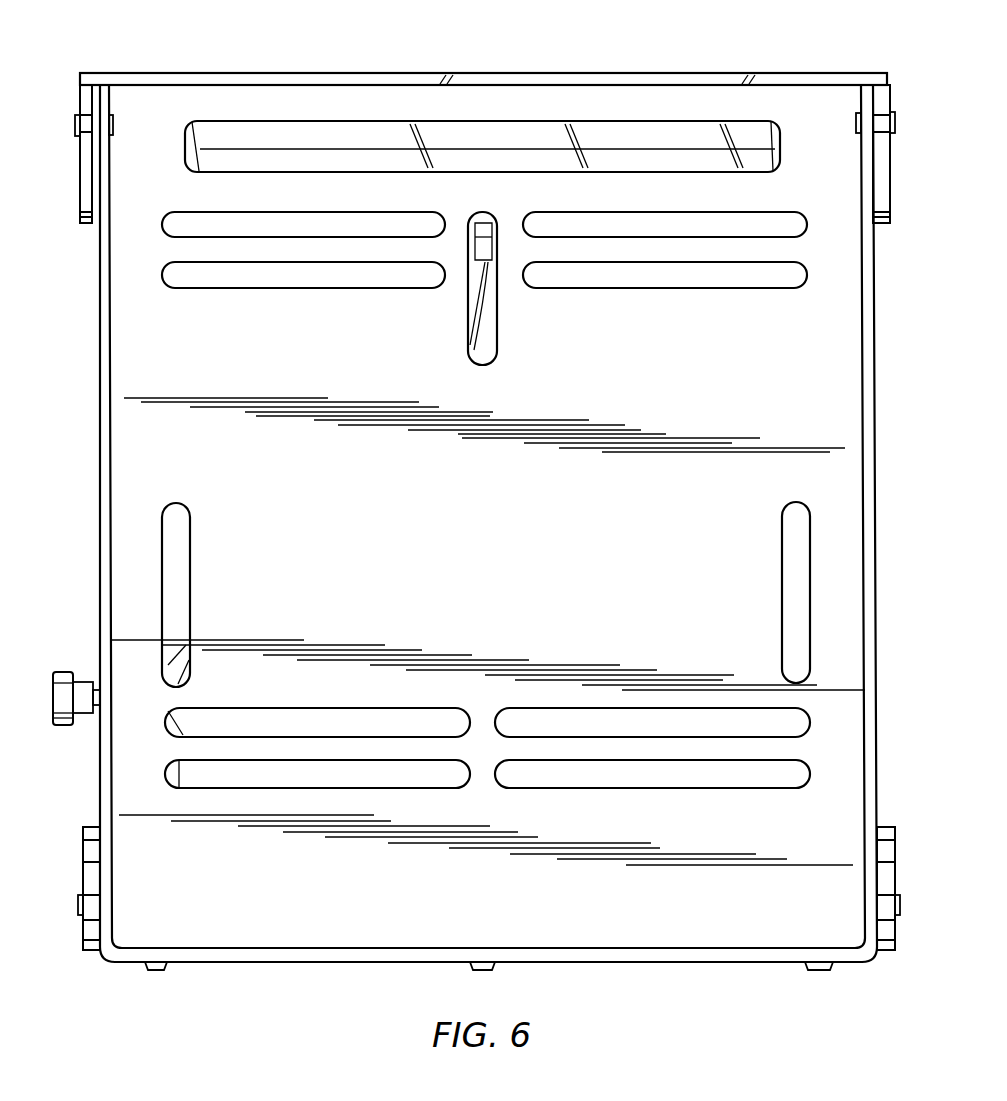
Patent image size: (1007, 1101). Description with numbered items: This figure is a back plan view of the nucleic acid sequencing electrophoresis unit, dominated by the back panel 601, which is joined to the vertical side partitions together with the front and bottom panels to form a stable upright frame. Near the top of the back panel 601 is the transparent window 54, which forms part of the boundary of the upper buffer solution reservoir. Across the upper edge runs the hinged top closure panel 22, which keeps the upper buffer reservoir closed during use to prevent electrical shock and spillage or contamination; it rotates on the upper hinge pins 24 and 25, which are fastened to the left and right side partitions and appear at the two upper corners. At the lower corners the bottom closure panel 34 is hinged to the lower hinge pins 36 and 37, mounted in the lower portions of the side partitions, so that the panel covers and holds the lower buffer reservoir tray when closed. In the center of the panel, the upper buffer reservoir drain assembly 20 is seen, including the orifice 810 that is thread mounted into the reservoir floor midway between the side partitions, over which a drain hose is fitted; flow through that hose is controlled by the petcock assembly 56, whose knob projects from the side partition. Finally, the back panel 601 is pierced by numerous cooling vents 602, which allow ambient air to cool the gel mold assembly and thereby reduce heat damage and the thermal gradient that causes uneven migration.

The hinged top closure panel 22 is at (130, 73).
The upper hinge pin 24 is at (76, 118).
The upper hinge pin 25 is at (896, 120).
The transparent window 54 is at (185, 150).
The orifice 810 is at (495, 228).
The upper buffer reservoir drain assembly 20 is at (496, 294).
The cooling vents 602 is at (251, 304).
The back panel 601 is at (482, 531).
The petcock assembly 56 is at (63, 672).
The bottom closure panel 34 is at (83, 876).
The lower hinge pin 37 is at (79, 908).
The lower hinge pin 36 is at (900, 900).